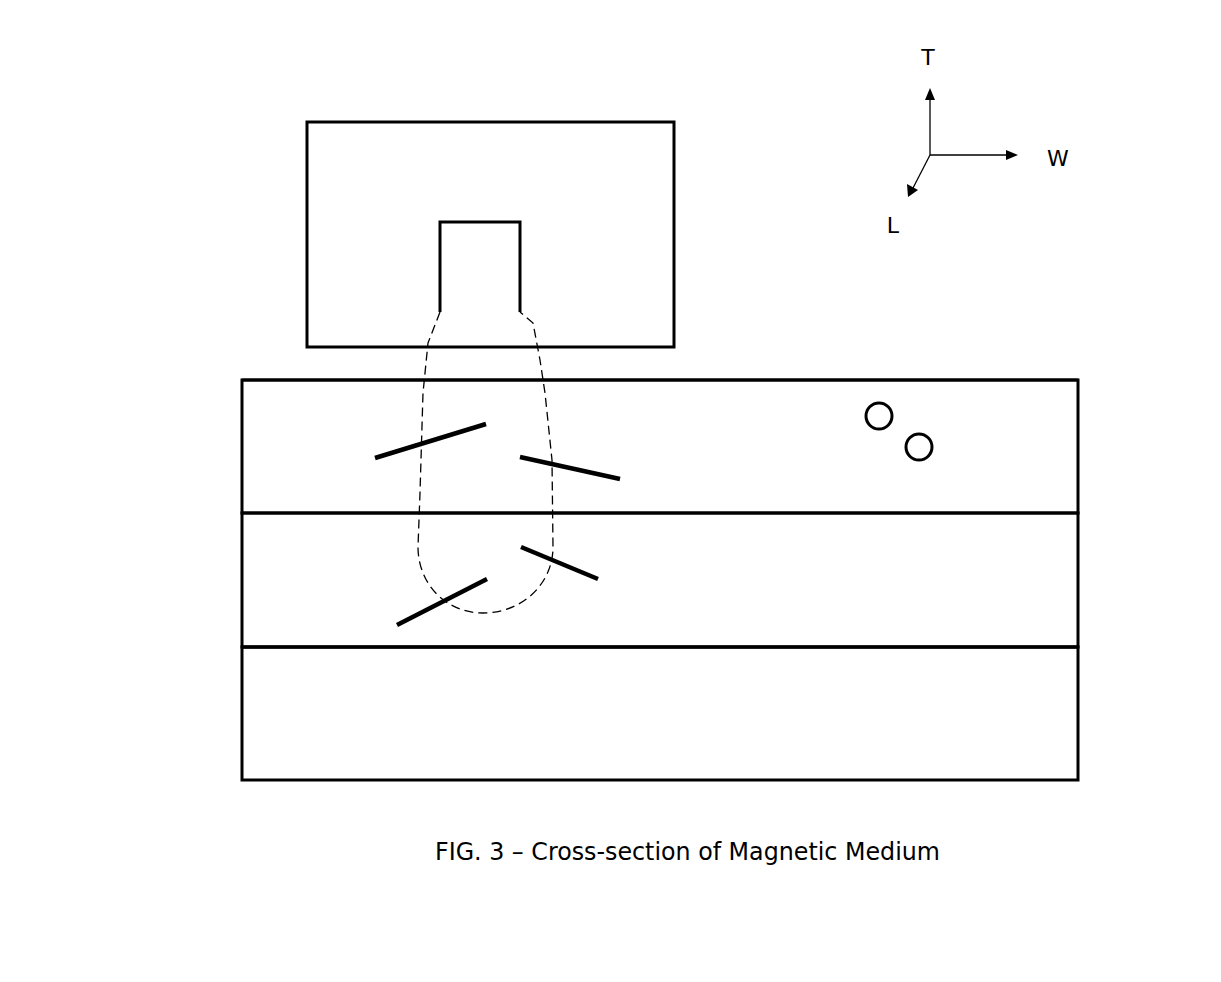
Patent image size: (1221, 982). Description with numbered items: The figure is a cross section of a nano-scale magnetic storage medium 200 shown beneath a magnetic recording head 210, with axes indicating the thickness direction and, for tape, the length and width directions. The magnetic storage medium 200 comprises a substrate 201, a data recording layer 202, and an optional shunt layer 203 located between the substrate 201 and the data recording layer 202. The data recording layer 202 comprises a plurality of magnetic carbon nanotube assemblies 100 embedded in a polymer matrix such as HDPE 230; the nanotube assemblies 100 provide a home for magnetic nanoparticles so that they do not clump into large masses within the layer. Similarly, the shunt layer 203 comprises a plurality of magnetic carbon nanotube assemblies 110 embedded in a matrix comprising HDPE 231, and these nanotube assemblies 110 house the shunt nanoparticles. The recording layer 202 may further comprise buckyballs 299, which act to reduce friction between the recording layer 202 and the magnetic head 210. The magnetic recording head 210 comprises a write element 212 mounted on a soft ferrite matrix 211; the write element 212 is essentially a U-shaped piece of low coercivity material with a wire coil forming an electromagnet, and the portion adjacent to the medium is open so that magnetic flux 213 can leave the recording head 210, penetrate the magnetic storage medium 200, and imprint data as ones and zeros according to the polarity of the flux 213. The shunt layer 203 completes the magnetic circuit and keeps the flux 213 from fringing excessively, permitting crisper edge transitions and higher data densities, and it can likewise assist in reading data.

The magnetic recording head 210 is at (491, 196).
The soft ferrite matrix 211 is at (642, 200).
The write element 212 is at (440, 234).
The magnetic flux 213 is at (416, 491).
The magnetic storage medium 200 is at (649, 506).
The substrate 201 is at (1085, 693).
The data recording layer 202 is at (1082, 463).
The shunt layer 203 is at (1083, 568).
The HDPE 230 is at (1046, 405).
The HDPE 231 is at (1055, 615).
The magnetic carbon nanotube assemblies 100 is at (397, 447).
The magnetic carbon nanotube assemblies 110 is at (403, 617).
The buckyballs 299 is at (925, 433).